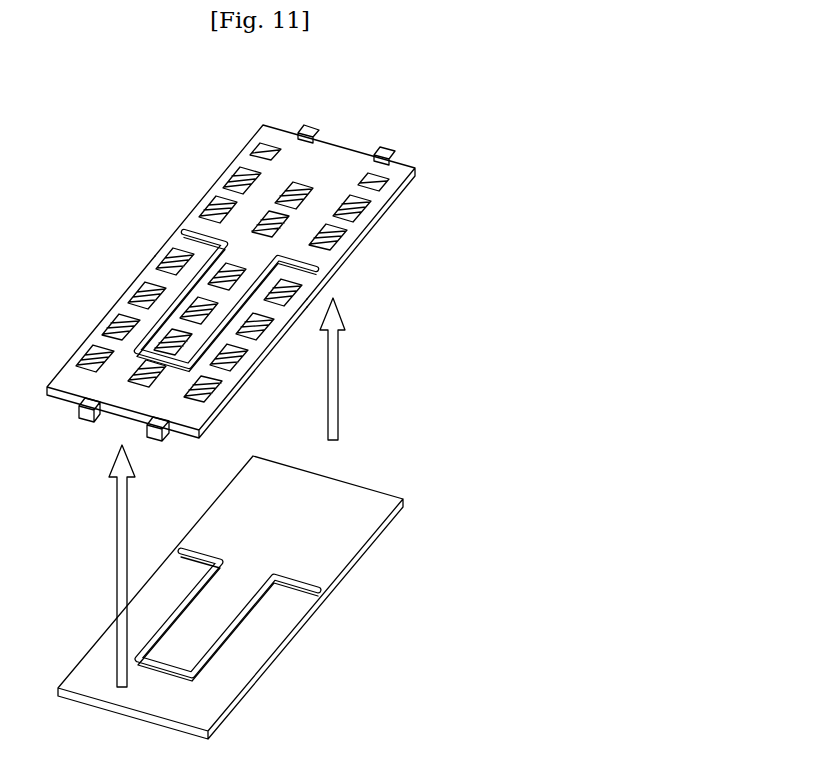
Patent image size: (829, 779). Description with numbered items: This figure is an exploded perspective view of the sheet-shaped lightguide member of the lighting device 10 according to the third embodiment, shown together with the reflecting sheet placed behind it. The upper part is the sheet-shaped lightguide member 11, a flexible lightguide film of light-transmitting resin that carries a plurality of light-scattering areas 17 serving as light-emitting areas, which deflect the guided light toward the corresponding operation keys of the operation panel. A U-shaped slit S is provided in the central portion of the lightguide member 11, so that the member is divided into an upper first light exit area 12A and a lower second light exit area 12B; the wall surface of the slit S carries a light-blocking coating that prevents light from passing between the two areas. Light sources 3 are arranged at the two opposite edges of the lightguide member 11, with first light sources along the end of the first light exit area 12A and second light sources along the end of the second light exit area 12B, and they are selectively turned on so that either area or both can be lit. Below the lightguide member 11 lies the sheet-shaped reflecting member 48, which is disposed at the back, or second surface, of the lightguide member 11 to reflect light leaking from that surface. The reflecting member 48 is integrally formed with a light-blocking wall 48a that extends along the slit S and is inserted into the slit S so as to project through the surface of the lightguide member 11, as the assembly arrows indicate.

The lighting device 10 is at (415, 137).
The sheet-shaped lightguide member 11 is at (360, 252).
The first light exit area 12A is at (237, 141).
The second light exit area 12B is at (158, 237).
The light-scattering areas 17 is at (380, 183).
The U-shaped slit S is at (328, 266).
The light sources 3 is at (298, 133).
The sheet-shaped reflecting member 48 is at (360, 530).
The light-blocking wall 48a is at (307, 573).